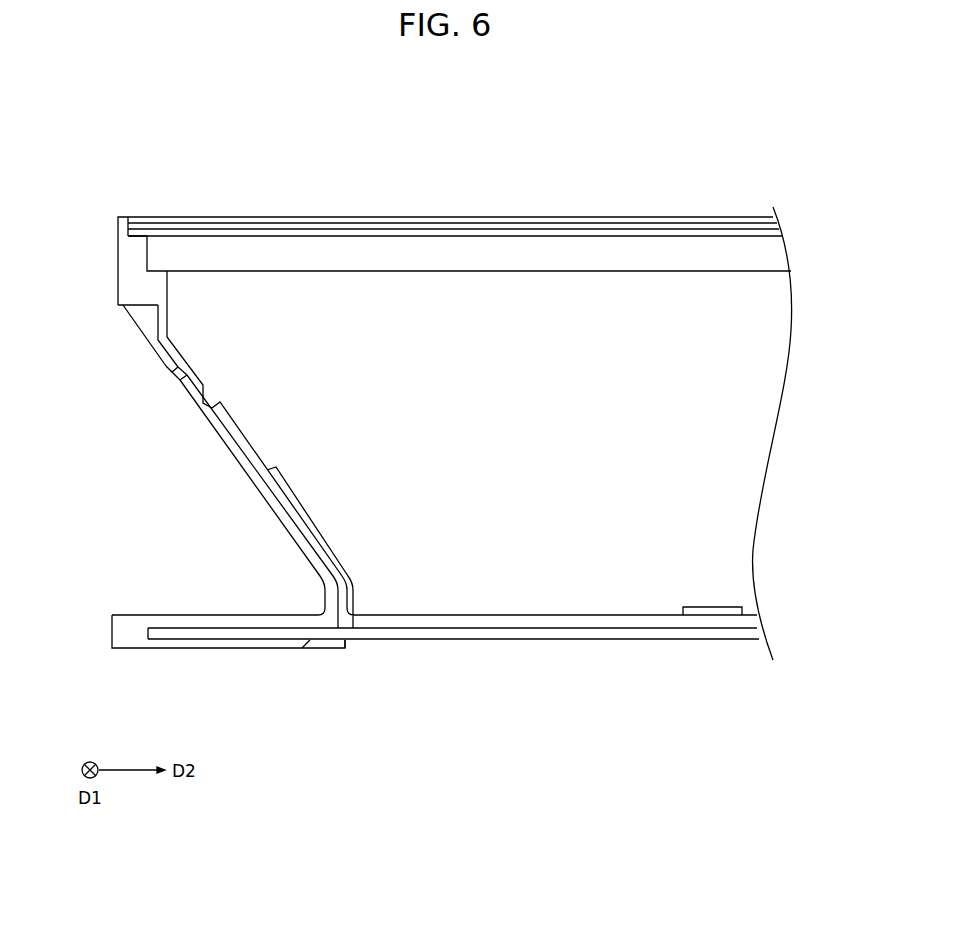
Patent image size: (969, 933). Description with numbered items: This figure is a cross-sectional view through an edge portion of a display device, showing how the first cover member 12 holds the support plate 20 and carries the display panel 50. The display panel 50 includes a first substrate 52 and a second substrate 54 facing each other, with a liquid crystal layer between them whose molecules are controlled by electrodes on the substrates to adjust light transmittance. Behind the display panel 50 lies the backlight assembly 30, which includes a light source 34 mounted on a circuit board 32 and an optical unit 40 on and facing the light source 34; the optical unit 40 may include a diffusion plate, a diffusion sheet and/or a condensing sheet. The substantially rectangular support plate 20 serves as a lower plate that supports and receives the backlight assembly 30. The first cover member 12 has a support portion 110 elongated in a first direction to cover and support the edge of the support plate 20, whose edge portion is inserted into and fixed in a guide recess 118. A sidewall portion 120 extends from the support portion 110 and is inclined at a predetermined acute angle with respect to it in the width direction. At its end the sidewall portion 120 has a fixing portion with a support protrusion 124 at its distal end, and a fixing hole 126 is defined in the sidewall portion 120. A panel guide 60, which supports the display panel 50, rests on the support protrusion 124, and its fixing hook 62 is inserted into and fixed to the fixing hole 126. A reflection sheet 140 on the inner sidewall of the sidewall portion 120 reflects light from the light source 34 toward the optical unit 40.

The first cover member 12 is at (179, 511).
The support plate 20 is at (757, 636).
The backlight assembly 30 is at (605, 595).
The circuit board 32 is at (750, 625).
The light source 34 is at (740, 612).
The optical unit 40 is at (777, 259).
The display panel 50 is at (499, 216).
The first substrate 52 is at (777, 233).
The second substrate 54 is at (776, 222).
The panel guide 60 is at (130, 277).
The fixing hook 62 is at (171, 379).
The support portion 110 is at (197, 631).
The guide recess 118 is at (304, 647).
The sidewall portion 120 is at (279, 523).
The support protrusion 124 is at (137, 316).
The fixing hole 126 is at (164, 363).
The reflection sheet 140 is at (327, 558).